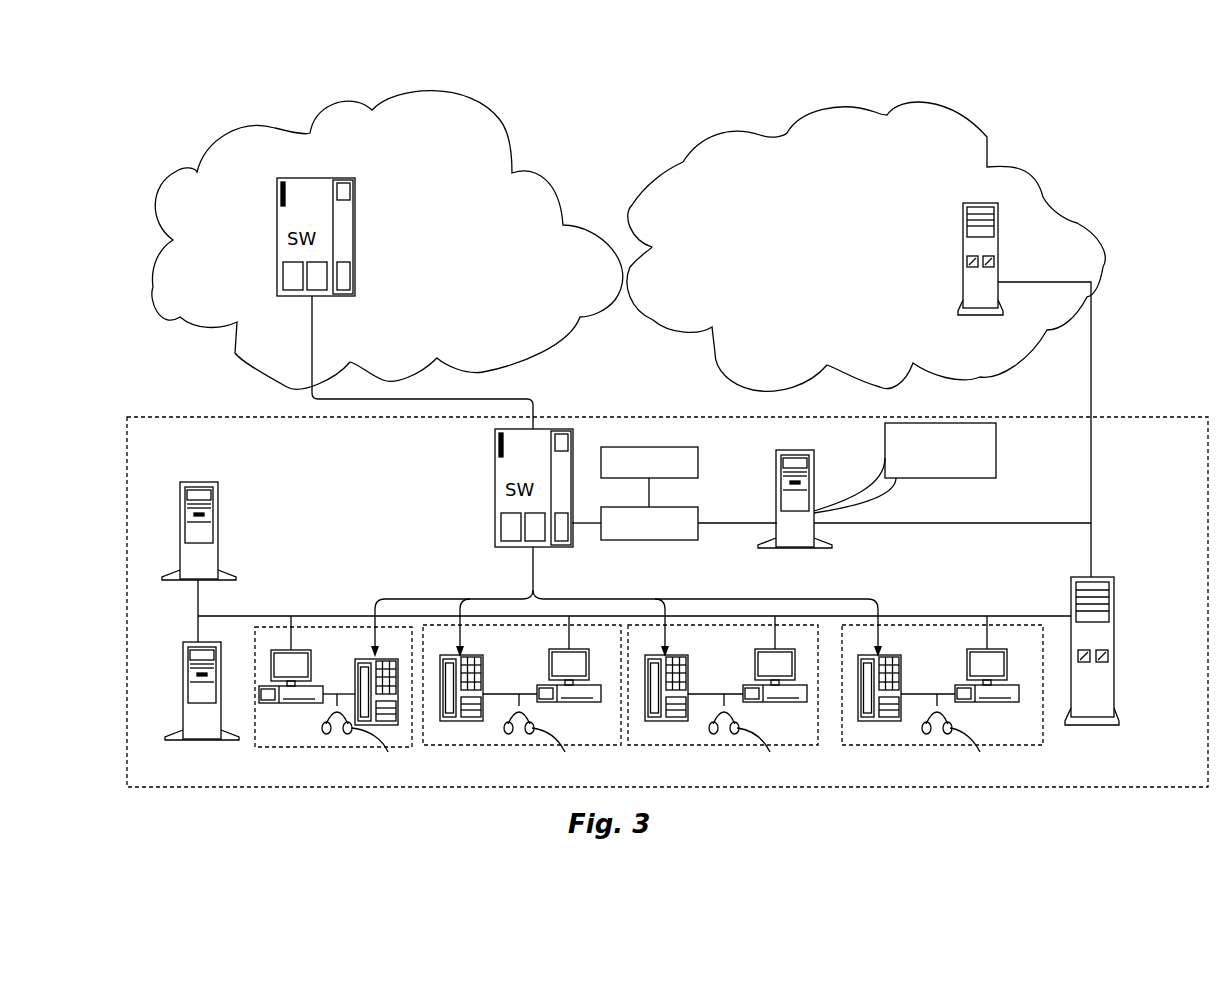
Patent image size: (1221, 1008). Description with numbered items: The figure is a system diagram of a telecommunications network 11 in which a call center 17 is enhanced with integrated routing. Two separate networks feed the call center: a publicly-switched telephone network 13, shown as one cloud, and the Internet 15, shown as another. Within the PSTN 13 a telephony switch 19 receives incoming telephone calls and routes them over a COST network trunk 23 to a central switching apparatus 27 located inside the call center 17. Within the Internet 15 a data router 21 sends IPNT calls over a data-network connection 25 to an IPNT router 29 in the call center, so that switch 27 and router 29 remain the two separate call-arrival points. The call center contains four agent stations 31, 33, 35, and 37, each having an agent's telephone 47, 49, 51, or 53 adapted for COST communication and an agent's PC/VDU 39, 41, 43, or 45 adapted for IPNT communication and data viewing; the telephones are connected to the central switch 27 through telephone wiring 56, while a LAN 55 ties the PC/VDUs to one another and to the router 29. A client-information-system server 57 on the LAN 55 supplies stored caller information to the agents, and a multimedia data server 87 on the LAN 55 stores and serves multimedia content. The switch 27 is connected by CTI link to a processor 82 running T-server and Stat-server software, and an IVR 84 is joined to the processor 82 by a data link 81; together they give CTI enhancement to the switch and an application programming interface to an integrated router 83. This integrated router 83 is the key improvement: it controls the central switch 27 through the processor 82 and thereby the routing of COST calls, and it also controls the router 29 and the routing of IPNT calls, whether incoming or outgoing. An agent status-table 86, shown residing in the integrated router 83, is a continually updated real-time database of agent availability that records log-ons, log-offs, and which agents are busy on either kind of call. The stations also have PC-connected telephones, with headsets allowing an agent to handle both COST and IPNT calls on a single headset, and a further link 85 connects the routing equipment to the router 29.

The telecommunications network 11 is at (585, 140).
The publicly-switched telephone network 13 is at (197, 172).
The Internet network 15 is at (683, 162).
The call center 17 is at (197, 415).
The telephony switch 19 is at (277, 240).
The data router 21 is at (963, 270).
The COST network trunk 23 is at (312, 352).
The data-network connection 25 is at (1091, 370).
The central switching apparatus 27 is at (495, 530).
The IPNT router 29 is at (1114, 600).
The agent station 31 is at (331, 704).
The agent station 33 is at (522, 703).
The agent station 35 is at (723, 703).
The agent station 37 is at (942, 703).
The agent's PC/VDU 39 is at (312, 704).
The agent's PC/VDU 41 is at (550, 703).
The agent's PC/VDU 43 is at (756, 703).
The agent's PC/VDU 45 is at (981, 703).
The agent's telephone 47 is at (360, 682).
The agent's telephone 49 is at (483, 682).
The agent's telephone 51 is at (688, 682).
The agent's telephone 53 is at (901, 682).
The LAN 55 is at (330, 616).
The telephone wiring 56 is at (720, 599).
The client-information-system server 57 is at (183, 685).
The data link 81 is at (709, 520).
The processor 82 is at (649, 541).
The integrated router 83 is at (815, 485).
The IVR 84 is at (698, 462).
The connection link to router 85 is at (937, 525).
The agent status-table 86 is at (996, 450).
The multimedia data server 87 is at (218, 527).